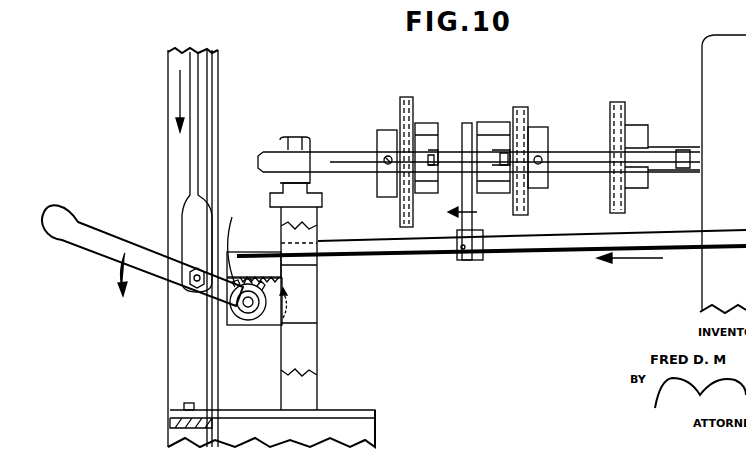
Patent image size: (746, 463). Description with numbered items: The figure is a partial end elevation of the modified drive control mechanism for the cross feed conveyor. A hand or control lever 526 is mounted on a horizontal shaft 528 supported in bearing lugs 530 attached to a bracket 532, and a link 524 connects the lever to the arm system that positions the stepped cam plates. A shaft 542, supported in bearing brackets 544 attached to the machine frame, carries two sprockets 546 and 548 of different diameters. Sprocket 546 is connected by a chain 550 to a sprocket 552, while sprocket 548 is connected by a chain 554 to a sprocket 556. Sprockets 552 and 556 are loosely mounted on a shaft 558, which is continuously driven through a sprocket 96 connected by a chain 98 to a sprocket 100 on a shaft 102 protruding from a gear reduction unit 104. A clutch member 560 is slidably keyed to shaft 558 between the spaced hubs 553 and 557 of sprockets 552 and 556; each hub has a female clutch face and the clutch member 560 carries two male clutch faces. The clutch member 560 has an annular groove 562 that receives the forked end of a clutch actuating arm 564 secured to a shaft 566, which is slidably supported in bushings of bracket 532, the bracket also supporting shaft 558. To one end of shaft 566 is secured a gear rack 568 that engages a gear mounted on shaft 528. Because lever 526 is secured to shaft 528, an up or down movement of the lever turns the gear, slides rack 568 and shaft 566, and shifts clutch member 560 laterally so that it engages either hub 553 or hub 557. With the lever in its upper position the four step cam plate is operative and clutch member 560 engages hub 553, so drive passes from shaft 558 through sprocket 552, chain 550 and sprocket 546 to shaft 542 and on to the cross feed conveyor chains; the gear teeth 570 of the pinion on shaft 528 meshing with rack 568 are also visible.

The sprocket 96 is at (638, 126).
The chain 98 is at (625, 213).
The sprocket 100 is at (650, 140).
The shaft 102 is at (700, 157).
The gear reduction unit 104 is at (700, 45).
The link 524 is at (204, 74).
The hand or control lever 526 is at (120, 238).
The horizontal shaft 528 is at (247, 322).
The bearing lugs 530 is at (300, 299).
The bracket 532 is at (300, 347).
The shaft 542 is at (331, 164).
The bearing brackets 544 is at (318, 218).
The sprocket 546 is at (548, 141).
The sprocket 548 is at (388, 150).
The chain 550 is at (528, 208).
The sprocket 552 is at (521, 108).
The hub 553 is at (484, 249).
The chain 554 is at (404, 228).
The sprocket 556 is at (411, 115).
The hub 557 is at (428, 133).
The shaft 558 is at (452, 180).
The clutch member 560 is at (466, 123).
The annular groove 562 is at (491, 130).
The clutch actuating arm 564 is at (472, 260).
The shaft 566 is at (570, 254).
The gear rack 568 is at (255, 262).
The gear teeth 570 is at (240, 241).